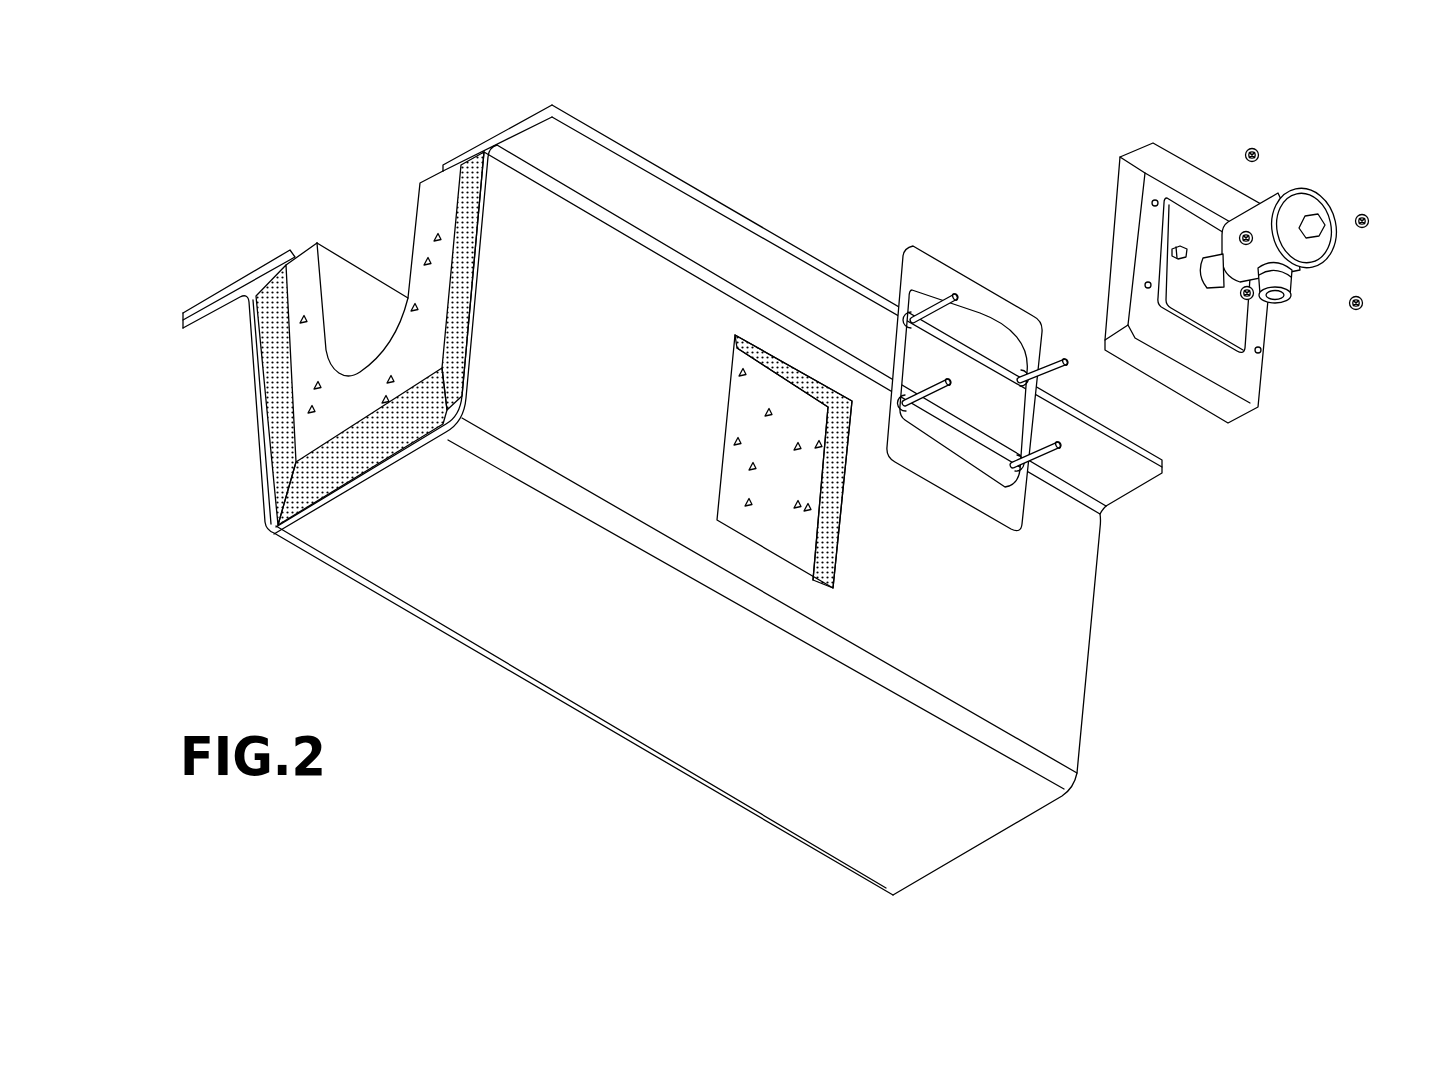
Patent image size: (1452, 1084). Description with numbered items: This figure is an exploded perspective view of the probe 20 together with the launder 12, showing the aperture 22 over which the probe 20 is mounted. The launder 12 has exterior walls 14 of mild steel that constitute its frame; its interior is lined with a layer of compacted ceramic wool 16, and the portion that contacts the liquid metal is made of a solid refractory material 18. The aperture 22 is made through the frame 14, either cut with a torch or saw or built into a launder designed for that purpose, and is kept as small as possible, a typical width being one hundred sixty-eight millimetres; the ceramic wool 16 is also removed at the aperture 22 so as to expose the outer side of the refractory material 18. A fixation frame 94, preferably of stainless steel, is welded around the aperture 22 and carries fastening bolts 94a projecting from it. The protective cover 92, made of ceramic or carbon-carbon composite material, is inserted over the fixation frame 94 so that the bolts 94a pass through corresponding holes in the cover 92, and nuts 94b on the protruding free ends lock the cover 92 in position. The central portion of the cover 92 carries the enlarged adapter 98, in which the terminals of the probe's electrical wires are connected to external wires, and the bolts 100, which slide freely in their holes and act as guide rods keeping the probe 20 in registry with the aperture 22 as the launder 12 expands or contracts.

The launder 12 is at (820, 210).
The exterior walls 14 is at (1083, 600).
The layer of compacted ceramic wool 16 is at (823, 557).
The solid refractory material 18 is at (732, 475).
The probe 20 is at (1296, 303).
The aperture 22 is at (725, 420).
The protective cover 92 is at (1222, 412).
The fixation frame 94 is at (963, 287).
The fastening bolts 94a is at (1062, 363).
The nuts 94b is at (1368, 222).
The enlarged adapter 98 is at (1262, 214).
The bolts 100 is at (1183, 247).